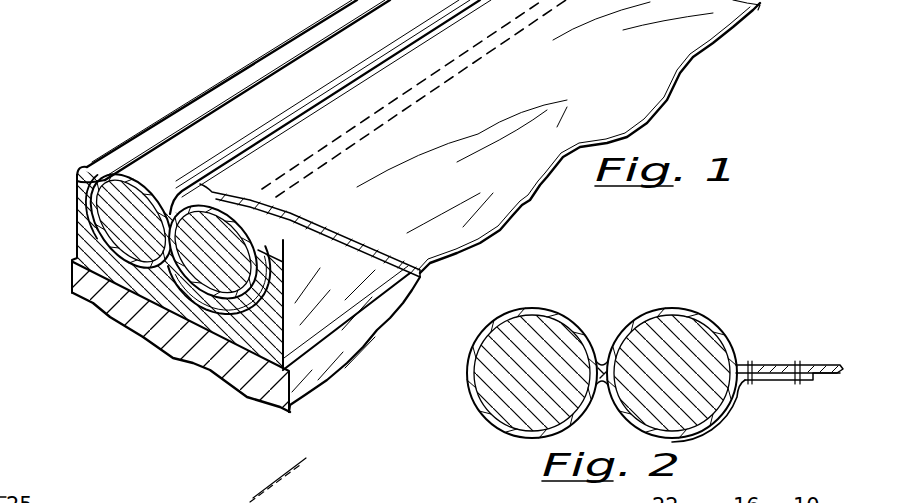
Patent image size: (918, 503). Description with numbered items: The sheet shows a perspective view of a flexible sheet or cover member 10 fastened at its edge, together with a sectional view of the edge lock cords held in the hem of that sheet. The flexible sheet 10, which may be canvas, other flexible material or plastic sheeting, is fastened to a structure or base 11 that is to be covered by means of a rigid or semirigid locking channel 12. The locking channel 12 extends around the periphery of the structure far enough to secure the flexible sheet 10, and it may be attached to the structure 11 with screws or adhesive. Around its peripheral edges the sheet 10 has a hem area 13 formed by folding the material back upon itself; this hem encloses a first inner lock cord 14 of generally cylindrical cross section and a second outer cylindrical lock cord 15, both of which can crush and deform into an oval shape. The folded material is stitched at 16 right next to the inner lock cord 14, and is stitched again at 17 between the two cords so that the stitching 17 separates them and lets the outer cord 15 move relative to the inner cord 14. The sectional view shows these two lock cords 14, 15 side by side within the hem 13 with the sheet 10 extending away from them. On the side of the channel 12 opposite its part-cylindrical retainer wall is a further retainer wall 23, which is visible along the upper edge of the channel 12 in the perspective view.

In FIG. 1, the flexible sheet or cover member 10 is at (525, 188).
In FIG. 2, the flexible sheet or cover member 10 is at (825, 366).
In FIG. 1, the structure or base 11 is at (360, 340).
In FIG. 1, the locking channel 12 is at (97, 257).
In FIG. 2, the hem area 13 is at (601, 362).
In FIG. 1, the first inner lock cord 14 is at (232, 259).
In FIG. 2, the first inner lock cord 14 is at (714, 400).
In FIG. 1, the second outer cylindrical lock cord 15 is at (105, 207).
In FIG. 2, the second outer cylindrical lock cord 15 is at (502, 388).
In FIG. 1, the stitching 16 is at (345, 155).
In FIG. 2, the stitching 16 is at (773, 364).
In FIG. 2, the stitching 17 is at (602, 378).
In FIG. 1, the retainer wall 23 is at (190, 112).